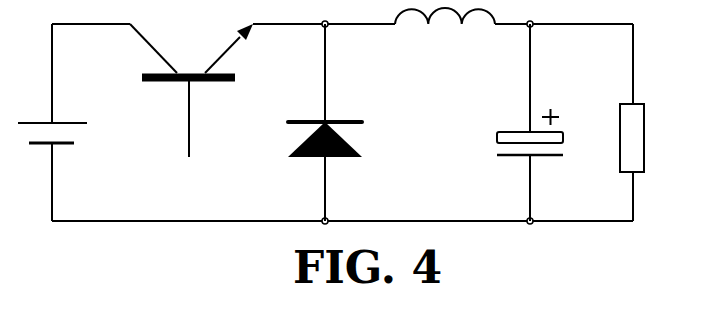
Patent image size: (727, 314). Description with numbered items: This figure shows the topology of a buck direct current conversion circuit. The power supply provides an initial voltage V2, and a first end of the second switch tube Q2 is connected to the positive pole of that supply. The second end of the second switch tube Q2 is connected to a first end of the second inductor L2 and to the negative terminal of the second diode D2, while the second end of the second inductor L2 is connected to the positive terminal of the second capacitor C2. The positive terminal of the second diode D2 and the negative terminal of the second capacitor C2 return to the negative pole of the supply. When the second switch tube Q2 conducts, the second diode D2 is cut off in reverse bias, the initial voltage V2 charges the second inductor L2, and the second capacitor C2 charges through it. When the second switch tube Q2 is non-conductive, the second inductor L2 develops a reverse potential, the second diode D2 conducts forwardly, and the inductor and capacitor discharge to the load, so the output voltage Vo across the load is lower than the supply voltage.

The second switch tube Q2 is at (191, 86).
The initial voltage V2 is at (74, 122).
The second inductor L2 is at (445, 36).
The second diode D2 is at (310, 122).
The second capacitor C2 is at (505, 122).
The output voltage Vo is at (652, 138).